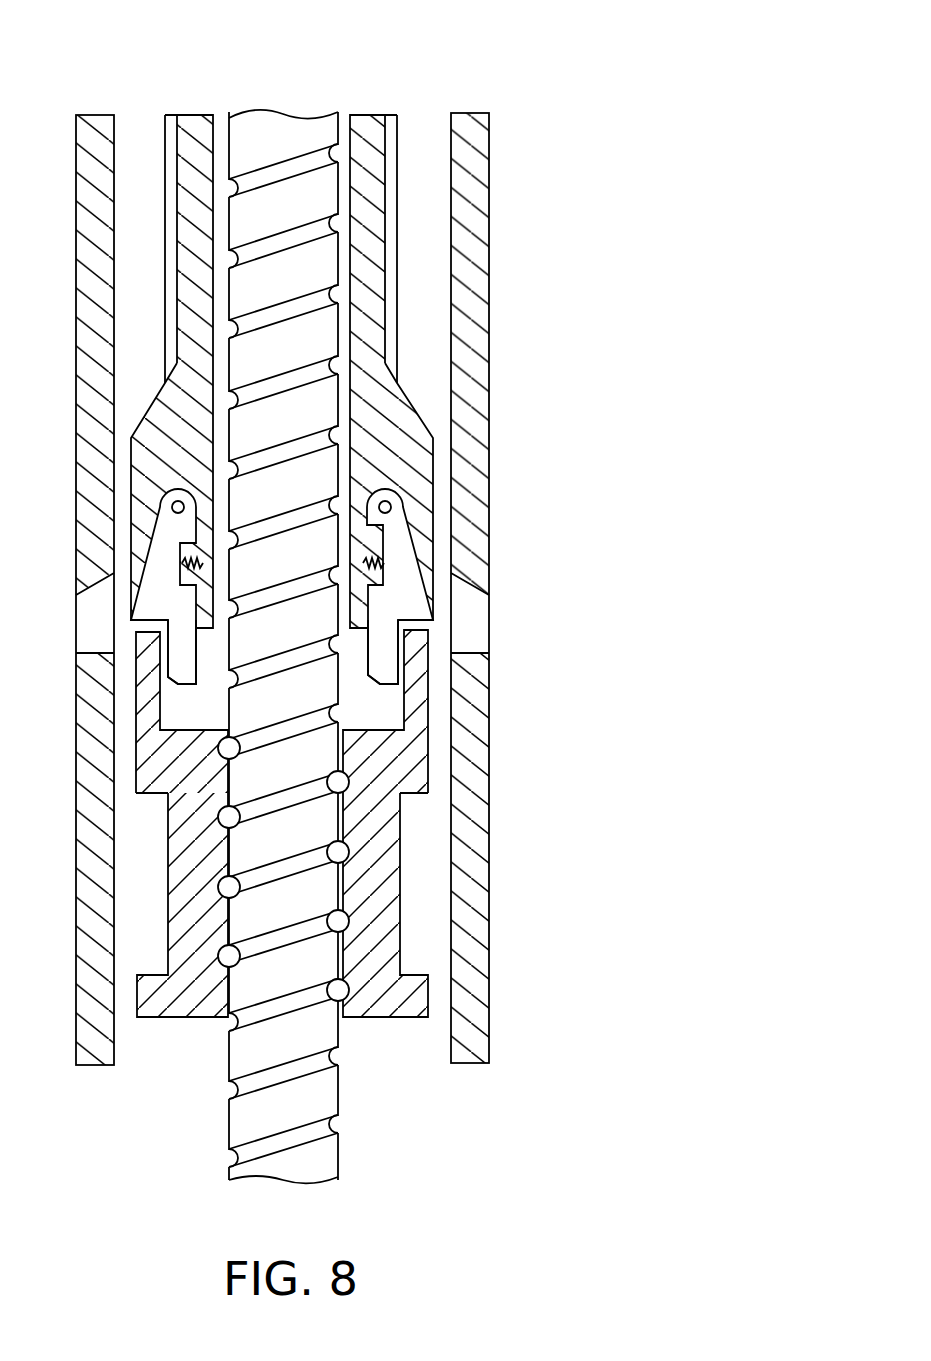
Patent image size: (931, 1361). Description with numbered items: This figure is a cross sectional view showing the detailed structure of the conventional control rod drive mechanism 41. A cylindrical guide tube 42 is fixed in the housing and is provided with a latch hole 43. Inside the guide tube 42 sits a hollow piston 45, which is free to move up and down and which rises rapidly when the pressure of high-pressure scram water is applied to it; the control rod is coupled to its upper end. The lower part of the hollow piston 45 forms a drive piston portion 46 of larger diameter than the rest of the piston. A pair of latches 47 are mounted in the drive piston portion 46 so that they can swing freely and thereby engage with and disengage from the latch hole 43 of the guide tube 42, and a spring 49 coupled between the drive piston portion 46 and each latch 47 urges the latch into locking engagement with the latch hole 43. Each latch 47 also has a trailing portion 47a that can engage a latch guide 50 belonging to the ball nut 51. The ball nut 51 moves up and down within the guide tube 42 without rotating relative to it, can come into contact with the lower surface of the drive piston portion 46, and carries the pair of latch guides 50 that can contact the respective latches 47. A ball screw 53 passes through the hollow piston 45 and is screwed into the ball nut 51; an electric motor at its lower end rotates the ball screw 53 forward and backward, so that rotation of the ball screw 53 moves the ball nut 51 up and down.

The control rod drive mechanism 41 is at (573, 91).
The guide tube 42 is at (468, 258).
The latch hole 43 is at (475, 603).
The hollow piston 45 is at (366, 140).
The drive piston portion 46 is at (410, 466).
The latch 47 is at (417, 606).
The trailing portion 47a is at (385, 657).
The spring 49 is at (367, 558).
The latch guide 50 is at (418, 702).
The ball nut 51 is at (378, 877).
The ball screw 53 is at (283, 1042).